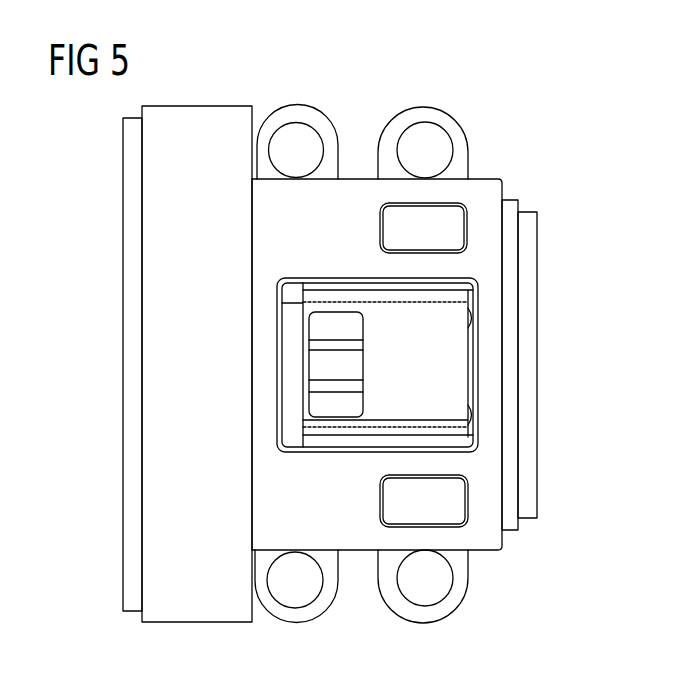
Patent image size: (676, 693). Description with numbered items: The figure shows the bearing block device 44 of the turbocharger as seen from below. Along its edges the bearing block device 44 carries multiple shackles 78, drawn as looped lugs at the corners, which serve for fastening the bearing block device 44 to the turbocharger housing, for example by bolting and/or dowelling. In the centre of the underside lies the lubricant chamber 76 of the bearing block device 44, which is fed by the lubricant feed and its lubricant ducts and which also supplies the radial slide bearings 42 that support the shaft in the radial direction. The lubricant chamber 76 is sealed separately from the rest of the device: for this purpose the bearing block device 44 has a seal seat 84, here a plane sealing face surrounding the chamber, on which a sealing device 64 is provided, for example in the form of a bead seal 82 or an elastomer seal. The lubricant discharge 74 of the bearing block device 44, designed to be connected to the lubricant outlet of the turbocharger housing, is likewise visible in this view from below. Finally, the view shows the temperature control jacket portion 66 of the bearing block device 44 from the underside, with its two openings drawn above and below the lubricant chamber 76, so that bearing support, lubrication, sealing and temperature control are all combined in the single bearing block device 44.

The radial slide bearing 42 is at (503, 137).
The bearing block device 44 is at (109, 619).
The sealing device 64 is at (487, 538).
The temperature control jacket portion 66 is at (388, 234).
The lubricant discharge 74 is at (340, 387).
The lubricant chamber 76 is at (322, 408).
The shackles 78 is at (397, 128).
The bead seal 82 is at (485, 228).
The seal seat 84 is at (346, 220).